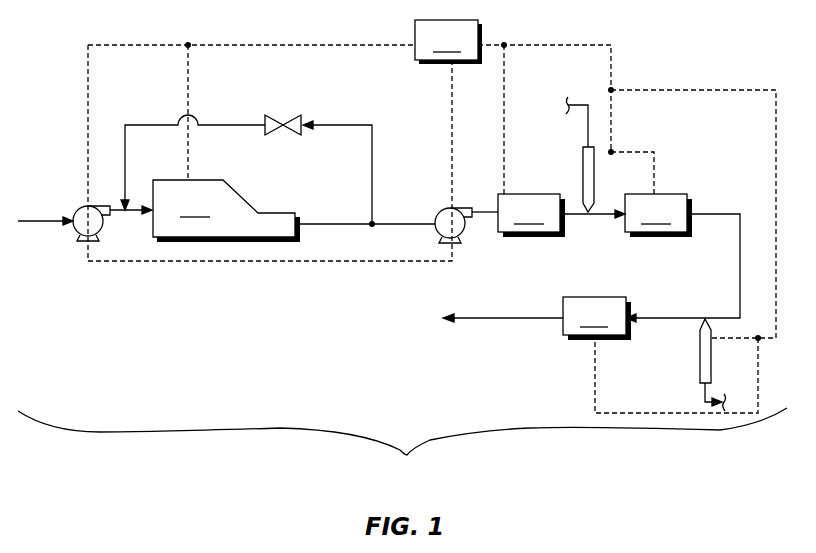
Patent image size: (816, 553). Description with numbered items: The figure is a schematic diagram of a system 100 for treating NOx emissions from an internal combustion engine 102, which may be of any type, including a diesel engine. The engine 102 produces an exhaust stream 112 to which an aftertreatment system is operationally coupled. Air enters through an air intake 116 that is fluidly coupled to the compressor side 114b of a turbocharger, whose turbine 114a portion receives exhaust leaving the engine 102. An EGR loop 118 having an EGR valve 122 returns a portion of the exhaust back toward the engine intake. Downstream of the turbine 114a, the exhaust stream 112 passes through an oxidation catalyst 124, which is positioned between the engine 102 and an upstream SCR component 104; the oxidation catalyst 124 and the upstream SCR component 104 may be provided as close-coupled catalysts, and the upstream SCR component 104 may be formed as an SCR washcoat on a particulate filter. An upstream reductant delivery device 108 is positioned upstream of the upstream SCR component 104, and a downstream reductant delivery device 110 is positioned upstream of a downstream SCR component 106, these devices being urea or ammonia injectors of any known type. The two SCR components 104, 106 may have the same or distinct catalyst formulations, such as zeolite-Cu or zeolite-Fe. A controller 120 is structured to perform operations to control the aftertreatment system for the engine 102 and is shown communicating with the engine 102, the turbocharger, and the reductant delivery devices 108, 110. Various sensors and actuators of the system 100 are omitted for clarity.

The system 100 is at (407, 455).
The internal combustion engine 102 is at (226, 211).
The upstream SCR component 104 is at (682, 258).
The downstream SCR component 106 is at (597, 318).
The upstream reductant delivery device 108 is at (582, 160).
The downstream reductant delivery device 110 is at (700, 350).
The exhaust stream 112 is at (517, 320).
The turbine 114a is at (443, 209).
The compressor side 114b is at (80, 208).
The air intake 116 is at (50, 228).
The EGR loop 118 is at (340, 123).
The controller 120 is at (448, 42).
The EGR valve 122 is at (276, 118).
The oxidation catalyst 124 is at (531, 215).